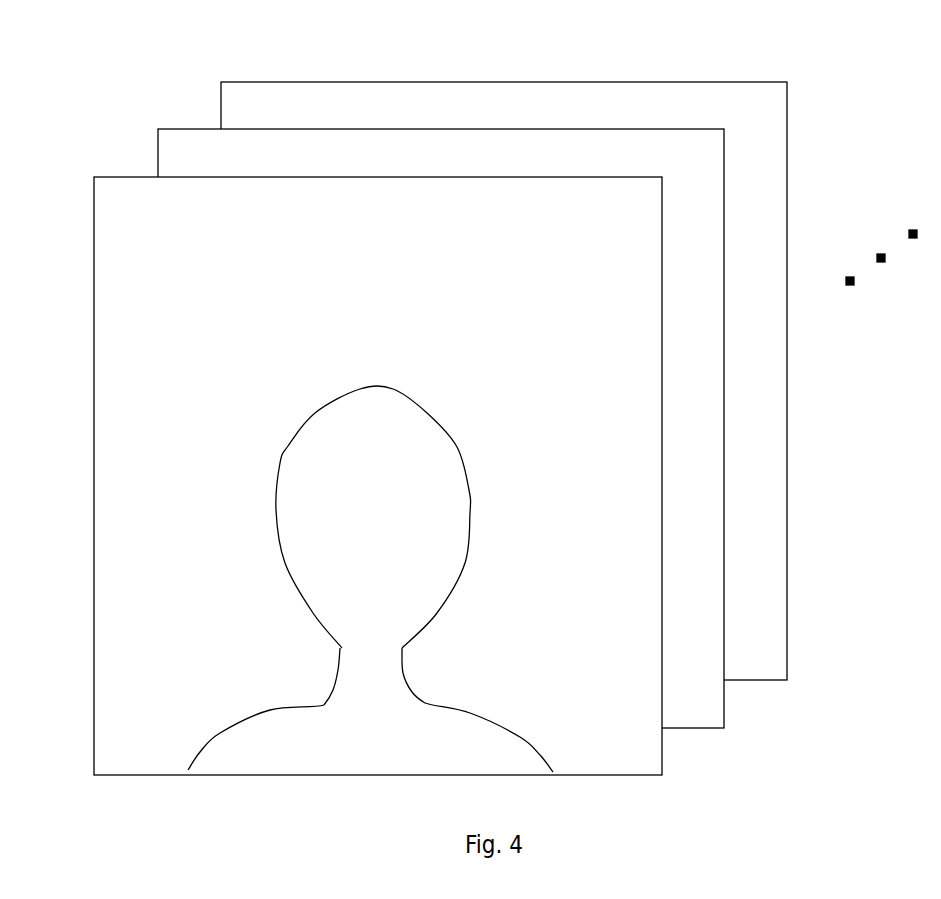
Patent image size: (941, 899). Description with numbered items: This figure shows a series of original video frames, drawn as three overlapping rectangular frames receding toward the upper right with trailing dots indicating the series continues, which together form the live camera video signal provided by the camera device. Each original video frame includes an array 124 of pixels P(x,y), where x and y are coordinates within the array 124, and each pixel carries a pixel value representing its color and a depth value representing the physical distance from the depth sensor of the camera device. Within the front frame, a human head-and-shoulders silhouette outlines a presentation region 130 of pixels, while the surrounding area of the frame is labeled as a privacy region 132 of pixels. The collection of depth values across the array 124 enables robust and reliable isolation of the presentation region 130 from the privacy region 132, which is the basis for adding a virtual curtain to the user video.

The array of pixels 124 is at (66, 309).
The presentation region 130 is at (370, 579).
The privacy region 132 is at (542, 340).